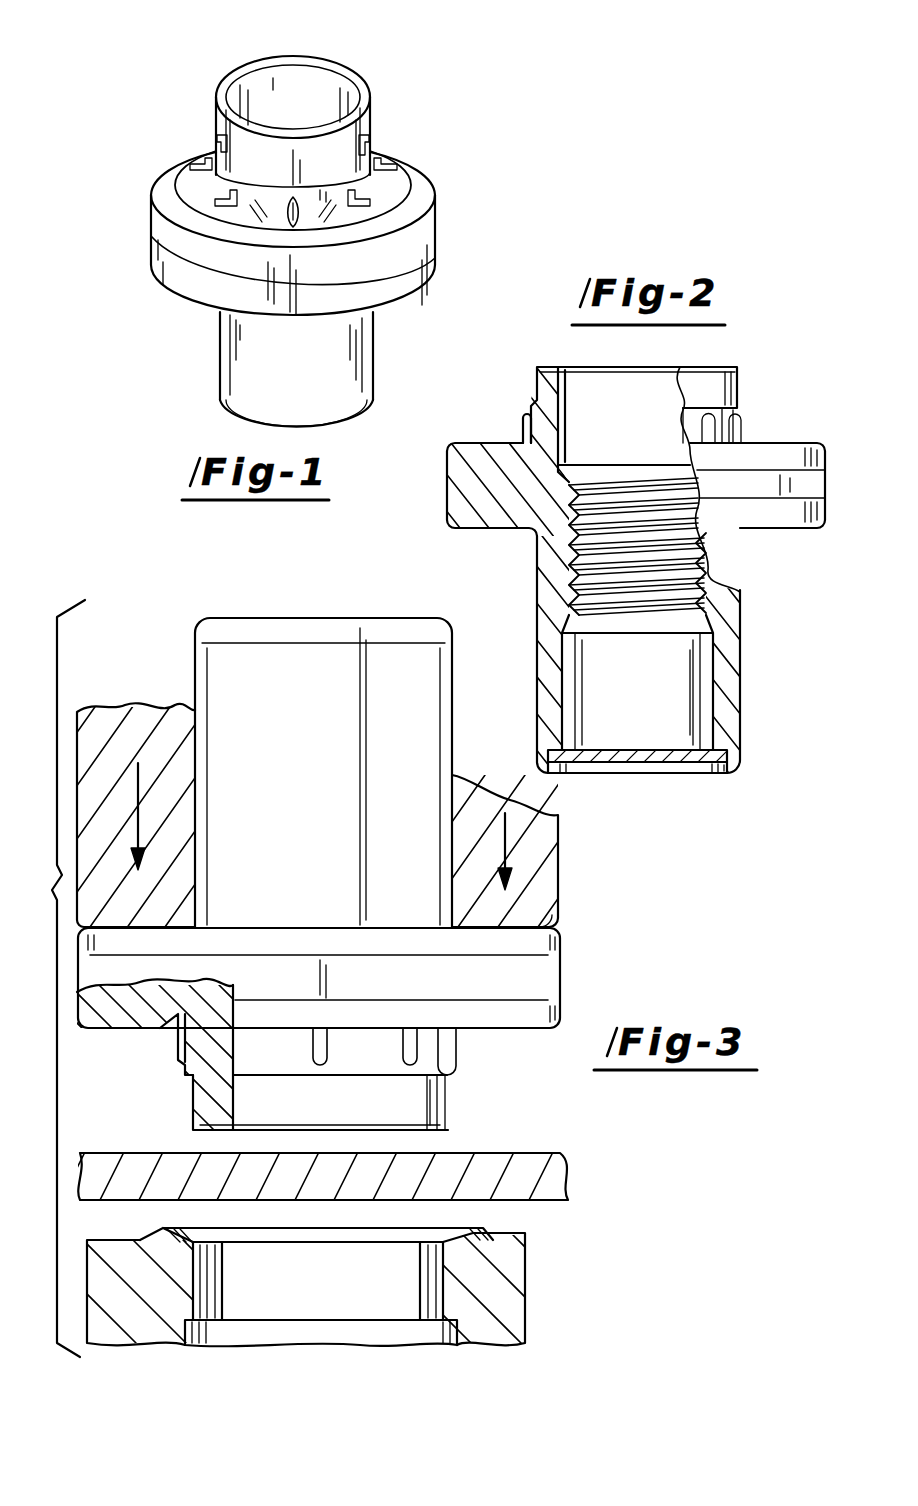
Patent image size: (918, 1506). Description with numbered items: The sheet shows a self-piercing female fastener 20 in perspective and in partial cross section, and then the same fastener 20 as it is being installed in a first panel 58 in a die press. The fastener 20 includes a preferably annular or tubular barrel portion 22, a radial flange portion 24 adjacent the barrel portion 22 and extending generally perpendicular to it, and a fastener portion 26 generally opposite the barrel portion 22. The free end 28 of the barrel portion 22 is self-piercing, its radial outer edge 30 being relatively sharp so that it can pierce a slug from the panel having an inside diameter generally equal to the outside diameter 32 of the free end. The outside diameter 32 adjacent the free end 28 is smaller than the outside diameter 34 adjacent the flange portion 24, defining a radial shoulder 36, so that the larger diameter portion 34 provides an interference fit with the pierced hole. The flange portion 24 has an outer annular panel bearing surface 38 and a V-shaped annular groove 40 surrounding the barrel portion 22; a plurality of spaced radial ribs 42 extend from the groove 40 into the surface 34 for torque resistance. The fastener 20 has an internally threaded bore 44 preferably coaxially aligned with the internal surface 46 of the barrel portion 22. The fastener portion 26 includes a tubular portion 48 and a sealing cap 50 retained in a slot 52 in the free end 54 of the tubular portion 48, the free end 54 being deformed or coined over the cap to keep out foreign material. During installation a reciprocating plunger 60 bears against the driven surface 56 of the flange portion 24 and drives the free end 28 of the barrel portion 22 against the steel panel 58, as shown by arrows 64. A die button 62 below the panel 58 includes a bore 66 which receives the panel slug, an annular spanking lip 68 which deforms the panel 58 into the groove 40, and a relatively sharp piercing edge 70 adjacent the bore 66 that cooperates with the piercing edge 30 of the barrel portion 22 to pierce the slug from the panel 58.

In FIG. 1, the fastener 20 is at (187, 94).
In FIG. 2, the fastener 20 is at (762, 396).
In FIG. 3, the fastener 20 is at (598, 999).
In FIG. 1, the barrel portion 22 is at (367, 125).
In FIG. 2, the barrel portion 22 is at (521, 395).
In FIG. 3, the barrel portion 22 is at (183, 1117).
In FIG. 1, the radial flange portion 24 is at (435, 230).
In FIG. 2, the radial flange portion 24 is at (807, 488).
In FIG. 3, the radial flange portion 24 is at (540, 983).
In FIG. 1, the fastener portion 26 is at (248, 363).
In FIG. 2, the fastener portion 26 is at (748, 644).
In FIG. 3, the fastener portion 26 is at (328, 763).
In FIG. 1, the free end of the barrel portion 28 is at (353, 76).
In FIG. 2, the free end of the barrel portion 28 is at (633, 365).
In FIG. 3, the free end of the barrel portion 28 is at (448, 1135).
In FIG. 1, the radial outer edge 30 is at (224, 79).
In FIG. 2, the radial outer edge 30 is at (537, 367).
In FIG. 3, the radial outer edge 30 is at (195, 1133).
In FIG. 1, the outside diameter of the free end of the barrel portion 32 is at (353, 148).
In FIG. 2, the outside diameter of the free end of the barrel portion 32 is at (730, 382).
In FIG. 3, the outside diameter of the free end of the barrel portion 32 is at (302, 1113).
In FIG. 1, the outside diameter adjacent the flange portion 34 is at (287, 205).
In FIG. 2, the outside diameter adjacent the flange portion 34 is at (731, 414).
In FIG. 3, the outside diameter adjacent the flange portion 34 is at (282, 1060).
In FIG. 1, the radial shoulder 36 is at (220, 137).
In FIG. 2, the radial shoulder 36 is at (693, 398).
In FIG. 3, the radial shoulder 36 is at (420, 1087).
In FIG. 1, the outer annular panel bearing surface 38 is at (415, 167).
In FIG. 2, the outer annular panel bearing surface 38 is at (793, 443).
In FIG. 3, the outer annular panel bearing surface 38 is at (106, 1033).
In FIG. 1, the annular groove 40 is at (382, 222).
In FIG. 2, the annular groove 40 is at (522, 417).
In FIG. 3, the annular groove 40 is at (175, 1018).
In FIG. 1, the radial ribs 42 is at (227, 190).
In FIG. 2, the radial ribs 42 is at (712, 430).
In FIG. 3, the radial ribs 42 is at (450, 1072).
In FIG. 2, the internally threaded bore 44 is at (585, 547).
In FIG. 1, the internal surface of the barrel portion 46 is at (322, 92).
In FIG. 2, the internal surface of the barrel portion 46 is at (575, 372).
In FIG. 1, the tubular portion 48 is at (243, 320).
In FIG. 2, the tubular portion 48 is at (727, 710).
In FIG. 2, the sealing cap 50 is at (647, 760).
In FIG. 2, the slot 52 is at (583, 773).
In FIG. 2, the free end of the tubular portion 54 is at (723, 773).
In FIG. 3, the driven surface 56 is at (547, 910).
In FIG. 3, the first panel 58 is at (540, 1173).
In FIG. 3, the reciprocating plunger 60 is at (165, 783).
In FIG. 3, the die button 62 is at (507, 1307).
In FIG. 3, the arrows 64 is at (133, 787).
In FIG. 3, the bore 66 is at (200, 1283).
In FIG. 3, the annular spanking lip 68 is at (480, 1233).
In FIG. 3, the piercing edge 70 is at (217, 1233).